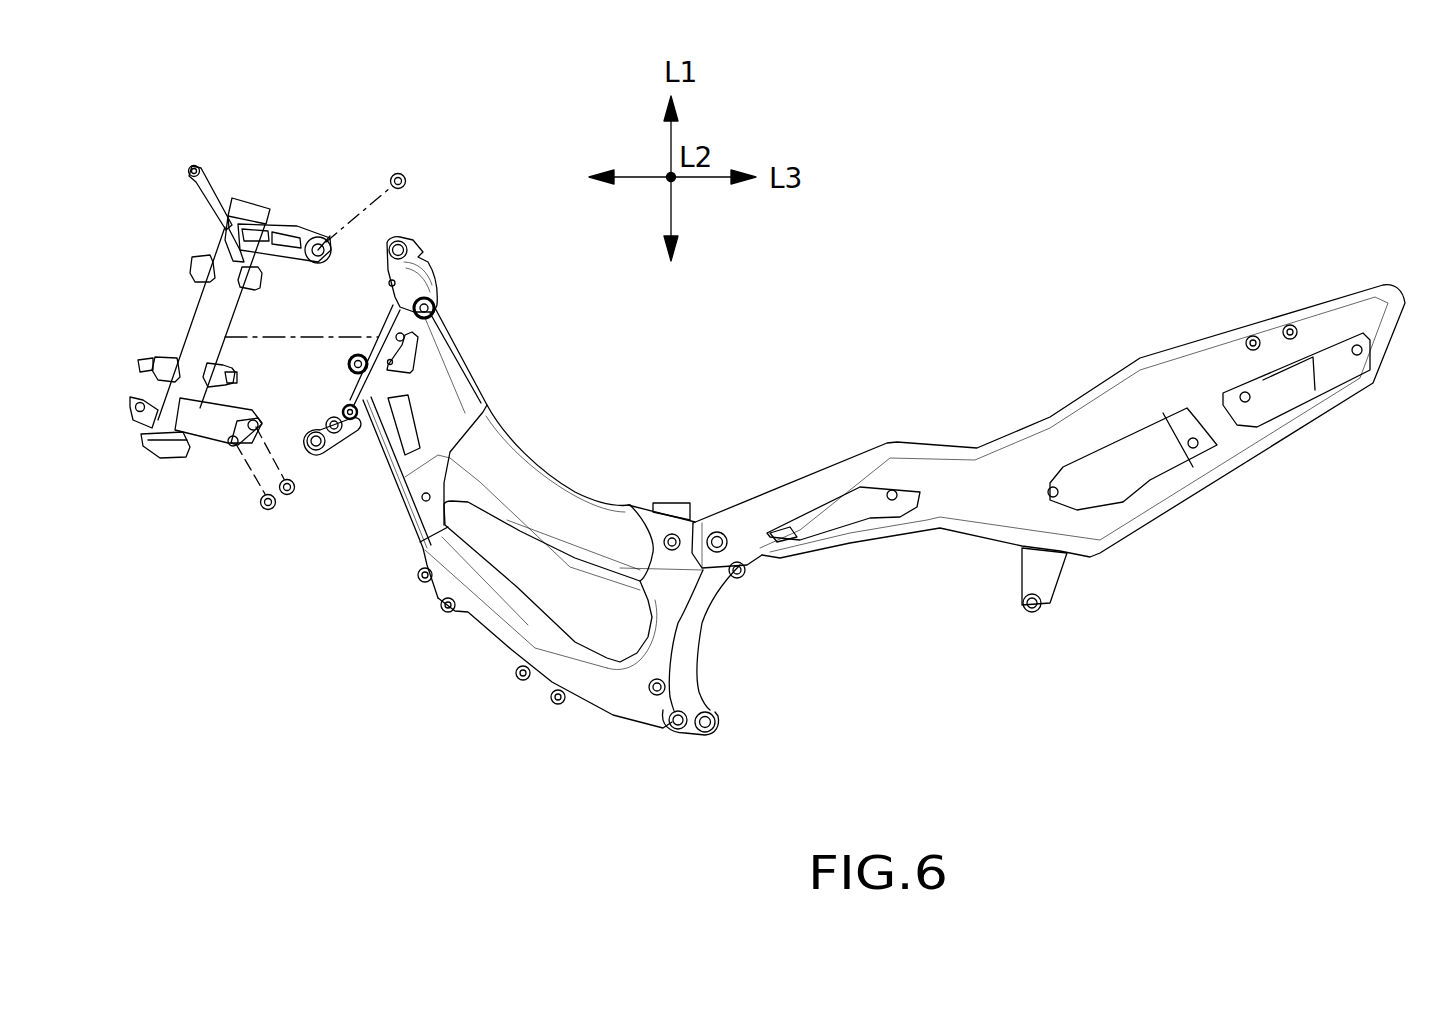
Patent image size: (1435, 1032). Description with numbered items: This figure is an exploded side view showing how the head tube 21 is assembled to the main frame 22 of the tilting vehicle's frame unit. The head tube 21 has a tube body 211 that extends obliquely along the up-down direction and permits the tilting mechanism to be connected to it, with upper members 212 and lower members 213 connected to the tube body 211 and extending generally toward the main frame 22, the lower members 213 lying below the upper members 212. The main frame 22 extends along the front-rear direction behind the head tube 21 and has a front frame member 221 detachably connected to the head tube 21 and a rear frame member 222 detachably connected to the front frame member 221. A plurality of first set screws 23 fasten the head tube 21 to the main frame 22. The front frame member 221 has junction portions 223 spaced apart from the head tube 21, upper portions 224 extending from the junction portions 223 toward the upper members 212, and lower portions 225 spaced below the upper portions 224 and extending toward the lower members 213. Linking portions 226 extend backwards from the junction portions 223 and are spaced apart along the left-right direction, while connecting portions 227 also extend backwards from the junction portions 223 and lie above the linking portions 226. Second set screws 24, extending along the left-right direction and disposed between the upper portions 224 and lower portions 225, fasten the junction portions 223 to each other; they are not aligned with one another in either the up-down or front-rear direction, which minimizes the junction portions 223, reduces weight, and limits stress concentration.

The head tube 21 is at (254, 300).
The tube body 211 is at (247, 207).
The upper members 212 is at (293, 235).
The lower members 213 is at (210, 443).
The main frame 22 is at (836, 516).
The front frame member 221 is at (515, 516).
The rear frame member 222 is at (1033, 368).
The junction portions 223 is at (428, 355).
The upper portions 224 is at (432, 277).
The lower portions 225 is at (343, 442).
The linking portions 226 is at (618, 695).
The connecting portions 227 is at (577, 497).
The first set screws 23 is at (407, 183).
The second set screws 24 is at (413, 309).